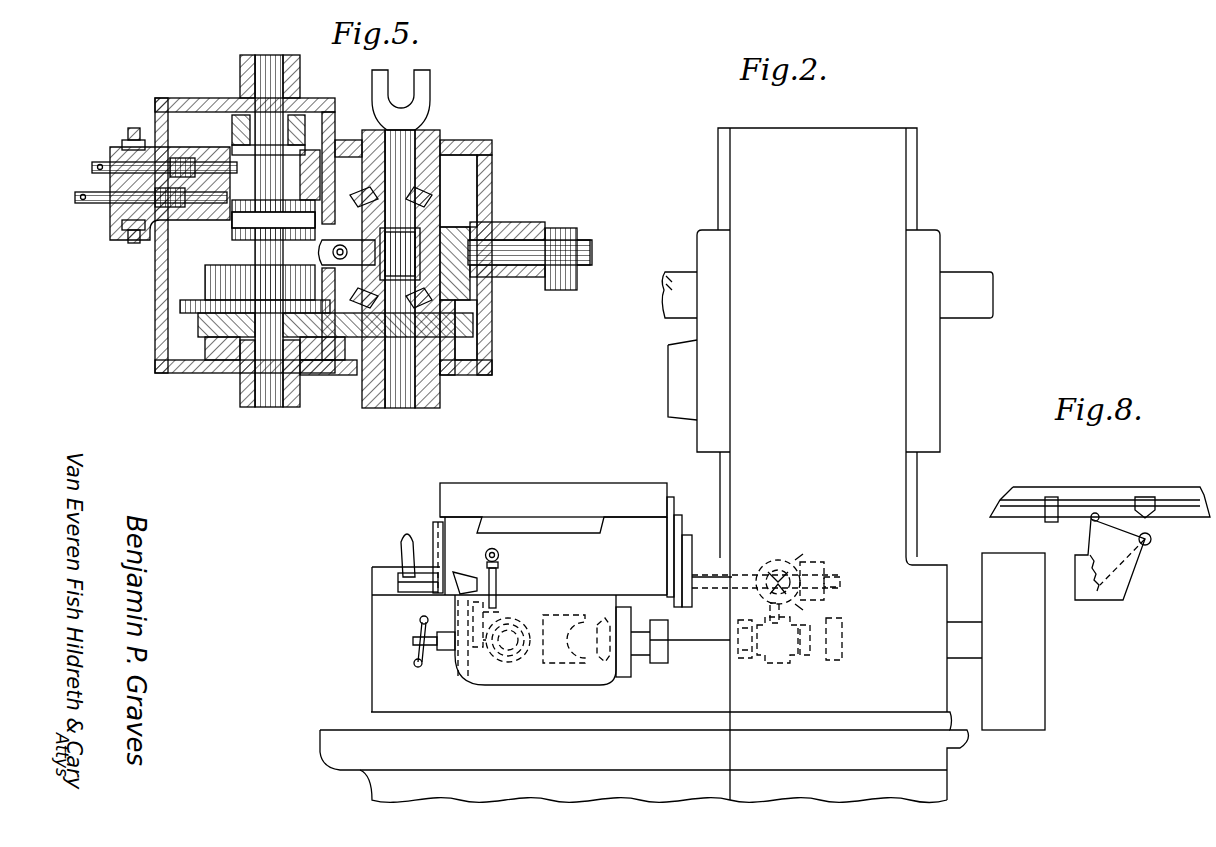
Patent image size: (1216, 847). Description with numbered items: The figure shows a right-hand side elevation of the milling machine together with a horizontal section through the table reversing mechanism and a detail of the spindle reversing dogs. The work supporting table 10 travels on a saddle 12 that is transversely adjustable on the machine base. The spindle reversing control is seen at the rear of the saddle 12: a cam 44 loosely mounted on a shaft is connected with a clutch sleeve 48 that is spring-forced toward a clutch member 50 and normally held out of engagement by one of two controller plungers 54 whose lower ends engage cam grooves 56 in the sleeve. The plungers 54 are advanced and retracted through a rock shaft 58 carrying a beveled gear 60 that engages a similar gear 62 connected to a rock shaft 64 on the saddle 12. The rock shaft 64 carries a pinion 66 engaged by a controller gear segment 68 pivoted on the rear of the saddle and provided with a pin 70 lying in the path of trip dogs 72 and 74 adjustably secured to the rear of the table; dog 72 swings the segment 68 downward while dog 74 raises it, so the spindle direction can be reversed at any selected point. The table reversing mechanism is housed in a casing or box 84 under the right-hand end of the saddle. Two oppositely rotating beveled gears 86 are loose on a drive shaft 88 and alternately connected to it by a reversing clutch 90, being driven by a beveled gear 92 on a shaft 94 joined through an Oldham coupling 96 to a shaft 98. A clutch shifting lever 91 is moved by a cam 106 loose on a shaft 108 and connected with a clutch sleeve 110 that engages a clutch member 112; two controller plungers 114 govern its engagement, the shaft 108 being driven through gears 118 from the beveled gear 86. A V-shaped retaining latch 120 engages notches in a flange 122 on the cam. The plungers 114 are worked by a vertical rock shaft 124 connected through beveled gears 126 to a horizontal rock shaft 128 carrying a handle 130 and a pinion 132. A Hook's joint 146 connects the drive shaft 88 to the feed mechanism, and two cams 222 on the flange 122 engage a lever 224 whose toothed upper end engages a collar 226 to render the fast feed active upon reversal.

In FIG. 2, the work supporting table 10 is at (545, 497).
In FIG. 2, the saddle 12 is at (620, 527).
In FIG. 2, the cam 44 is at (835, 658).
In FIG. 2, the clutch sleeve 48 is at (773, 658).
In FIG. 2, the clutch member 50 is at (740, 656).
In FIG. 2, the controller plungers 54 is at (770, 610).
In FIG. 2, the cam grooves 56 is at (782, 655).
In FIG. 2, the rock shaft 58 is at (775, 575).
In FIG. 2, the beveled gear 60 is at (790, 572).
In FIG. 2, the beveled gear 62 is at (815, 562).
In FIG. 2, the rock shaft 64 is at (838, 588).
In FIG. 2, the pinion 66 is at (680, 595).
In FIG. 8, the pinion 66 is at (1100, 592).
In FIG. 8, the controller gear segment 68 is at (1088, 535).
In FIG. 8, the pin 70 is at (1095, 512).
In FIG. 8, the trip dog 72 is at (1142, 498).
In FIG. 8, the trip dog 74 is at (1050, 498).
In FIG. 5, the casing or box 84 is at (493, 355).
In FIG. 5, the beveled gears 86 is at (428, 400).
In FIG. 5, the drive shaft 88 is at (405, 405).
In FIG. 5, the reversing clutch 90 is at (468, 292).
In FIG. 5, the clutch shifting lever 91 is at (346, 242).
In FIG. 2, the clutch shifting lever 91 is at (560, 613).
In FIG. 5, the beveled gear 92 is at (456, 222).
In FIG. 2, the beveled gear 92 is at (605, 618).
In FIG. 5, the shaft 94 is at (520, 245).
In FIG. 5, the Oldham coupling 96 is at (560, 228).
In FIG. 2, the shaft 98 is at (690, 645).
In FIG. 5, the cam 106 is at (230, 270).
In FIG. 5, the shaft 108 is at (275, 402).
In FIG. 5, the clutch sleeve 110 is at (300, 168).
In FIG. 5, the clutch member 112 is at (232, 130).
In FIG. 5, the controller plungers 114 is at (108, 205).
In FIG. 5, the gears 118 is at (340, 340).
In FIG. 5, the retaining latch 120 is at (188, 315).
In FIG. 5, the flange 122 is at (380, 262).
In FIG. 5, the vertical rock shaft 124 is at (170, 183).
In FIG. 2, the vertical rock shaft 124 is at (456, 613).
In FIG. 2, the beveled gears 126 is at (478, 581).
In FIG. 2, the horizontal rock shaft 128 is at (458, 557).
In FIG. 2, the handle 130 is at (400, 548).
In FIG. 2, the pinion 132 is at (400, 581).
In FIG. 5, the Hook's joint 146 is at (432, 85).
In FIG. 5, the cams 222 is at (330, 337).
In FIG. 2, the lever 224 is at (498, 568).
In FIG. 2, the collar 226 is at (499, 550).